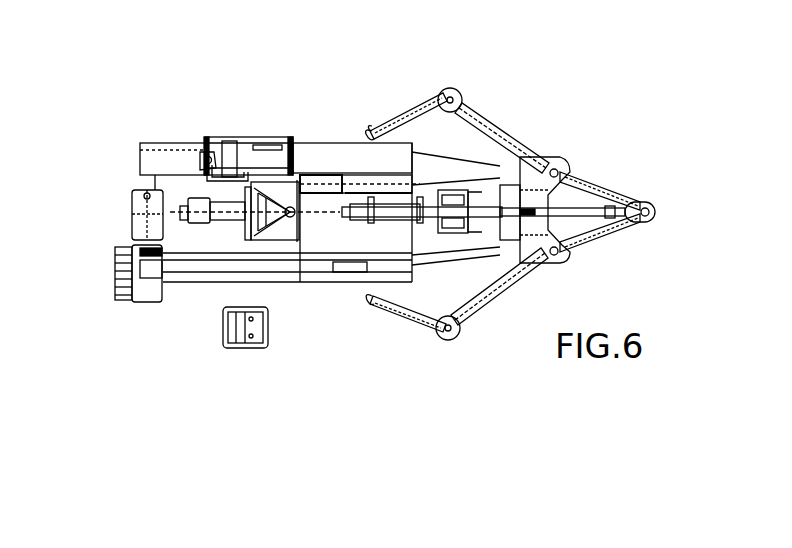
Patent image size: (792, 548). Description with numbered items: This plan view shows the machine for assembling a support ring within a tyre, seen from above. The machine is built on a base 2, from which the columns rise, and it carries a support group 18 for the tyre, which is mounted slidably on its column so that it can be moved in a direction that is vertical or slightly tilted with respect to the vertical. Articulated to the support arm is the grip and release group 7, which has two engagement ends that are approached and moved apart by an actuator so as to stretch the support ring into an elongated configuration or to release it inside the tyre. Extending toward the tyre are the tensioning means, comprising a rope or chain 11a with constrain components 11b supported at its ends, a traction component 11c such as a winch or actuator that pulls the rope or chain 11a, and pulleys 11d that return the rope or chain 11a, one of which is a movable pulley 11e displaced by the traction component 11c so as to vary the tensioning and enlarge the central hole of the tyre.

The base 2 is at (158, 143).
The support group 18 is at (278, 137).
The grip and release group 7 is at (340, 240).
The rope or chain 11a is at (438, 100).
The constrain components 11b is at (370, 128).
The traction component 11c is at (585, 196).
The pulleys 11d is at (462, 104).
The movable pulley 11e is at (658, 212).